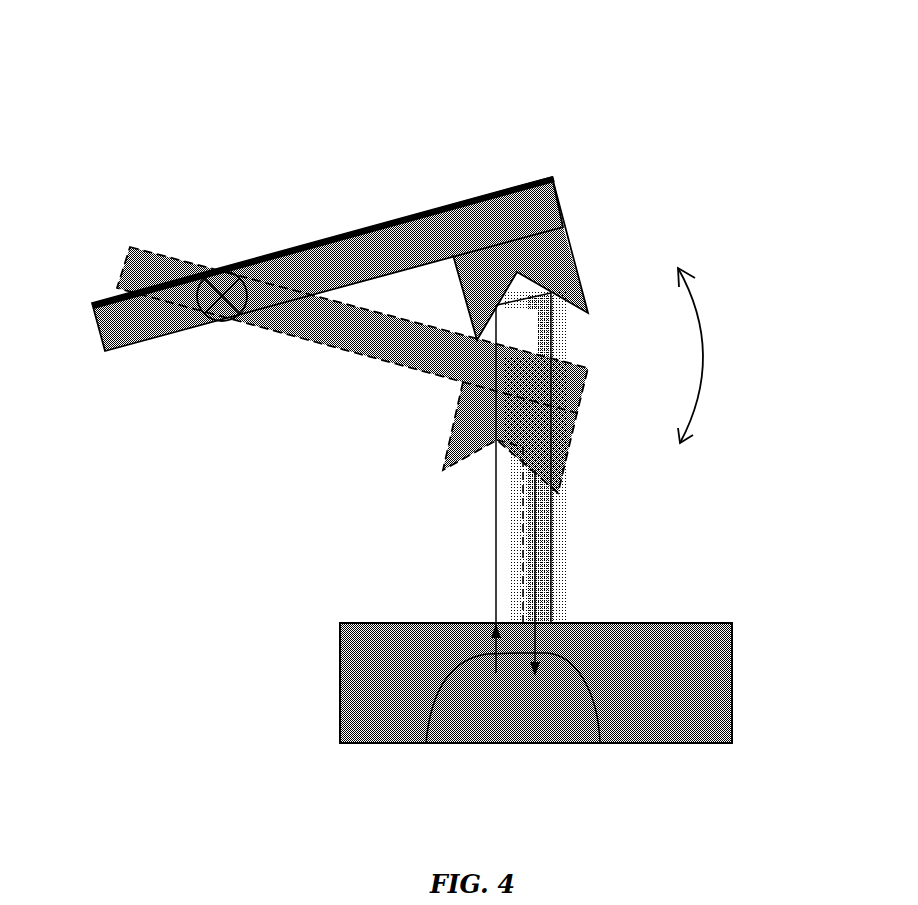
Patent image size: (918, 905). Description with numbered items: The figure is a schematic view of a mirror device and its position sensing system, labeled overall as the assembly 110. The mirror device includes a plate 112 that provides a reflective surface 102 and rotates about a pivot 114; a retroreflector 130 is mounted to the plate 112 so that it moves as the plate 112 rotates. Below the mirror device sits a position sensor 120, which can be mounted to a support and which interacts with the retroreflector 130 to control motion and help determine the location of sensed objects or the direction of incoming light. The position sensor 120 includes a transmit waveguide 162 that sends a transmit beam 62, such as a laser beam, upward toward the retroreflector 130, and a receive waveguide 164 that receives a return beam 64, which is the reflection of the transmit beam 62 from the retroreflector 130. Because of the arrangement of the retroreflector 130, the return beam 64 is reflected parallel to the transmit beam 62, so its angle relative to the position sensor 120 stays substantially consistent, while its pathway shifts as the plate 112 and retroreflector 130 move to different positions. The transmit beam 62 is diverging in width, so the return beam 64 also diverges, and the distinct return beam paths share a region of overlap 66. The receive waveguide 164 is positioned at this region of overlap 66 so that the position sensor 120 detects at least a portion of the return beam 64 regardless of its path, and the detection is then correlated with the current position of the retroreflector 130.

The scanning mirror assembly 110 is at (203, 79).
The reflective surface 102 is at (348, 230).
The plate 112 is at (512, 186).
The pivot 114 is at (217, 268).
The retroreflector 130 is at (560, 248).
The position sensor 120 is at (357, 622).
The transmit waveguide 162 is at (490, 620).
The receive waveguide 164 is at (573, 621).
The region of overlap 66 is at (533, 572).
The transmit beam 62 is at (428, 743).
The return beam 64 is at (600, 743).